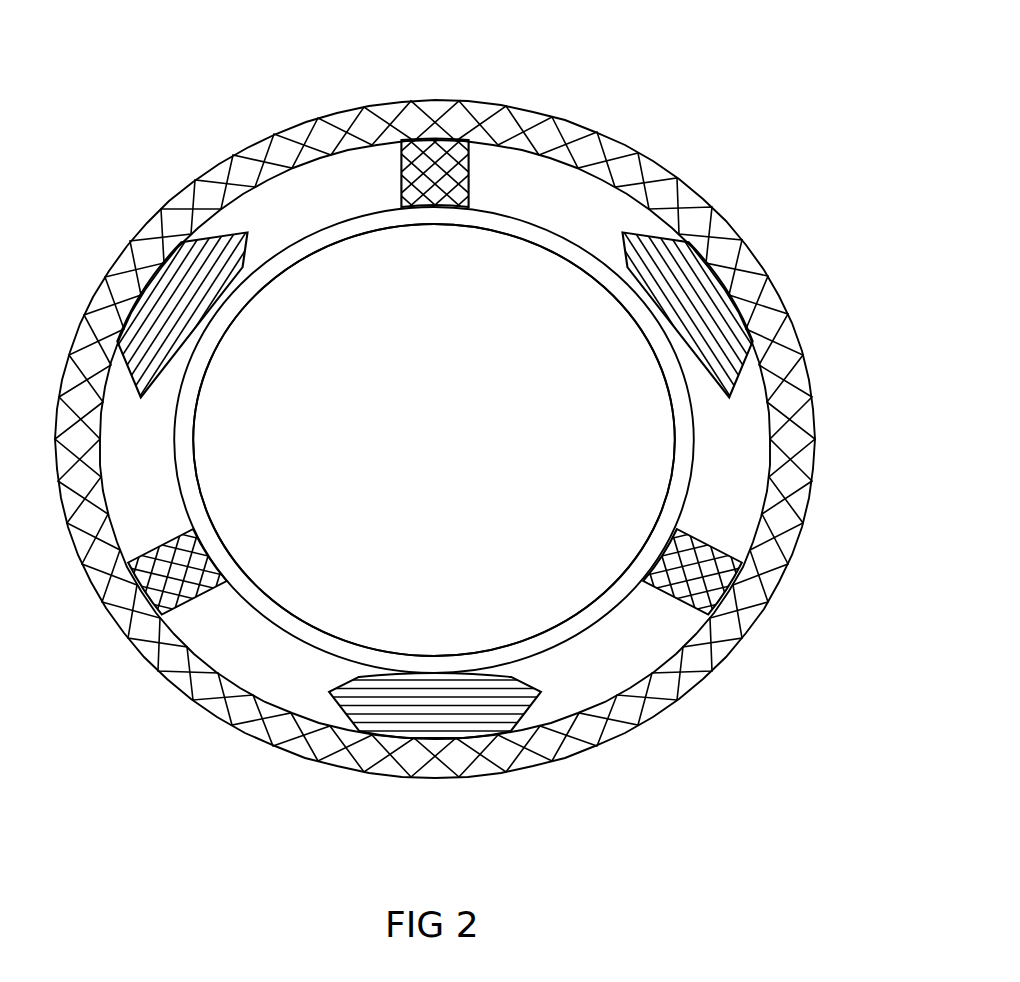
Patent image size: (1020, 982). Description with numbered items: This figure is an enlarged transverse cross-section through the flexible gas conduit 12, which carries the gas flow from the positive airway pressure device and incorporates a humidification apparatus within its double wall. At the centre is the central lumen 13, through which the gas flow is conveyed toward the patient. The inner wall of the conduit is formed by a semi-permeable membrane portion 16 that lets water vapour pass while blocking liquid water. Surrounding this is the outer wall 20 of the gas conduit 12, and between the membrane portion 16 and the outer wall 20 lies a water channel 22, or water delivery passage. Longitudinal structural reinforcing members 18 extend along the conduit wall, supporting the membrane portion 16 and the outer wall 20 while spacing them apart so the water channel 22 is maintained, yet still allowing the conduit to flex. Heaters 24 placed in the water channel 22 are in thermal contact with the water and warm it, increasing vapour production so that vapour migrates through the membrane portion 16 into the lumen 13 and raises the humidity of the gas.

The flexible gas conduit 12 is at (441, 453).
The central lumen 13 is at (434, 440).
The semi-permeable membrane portion 16 is at (540, 220).
The structural reinforcing member 18 is at (422, 160).
The outer wall 20 is at (463, 780).
The water channel 22 is at (325, 192).
The heater 24 is at (162, 305).